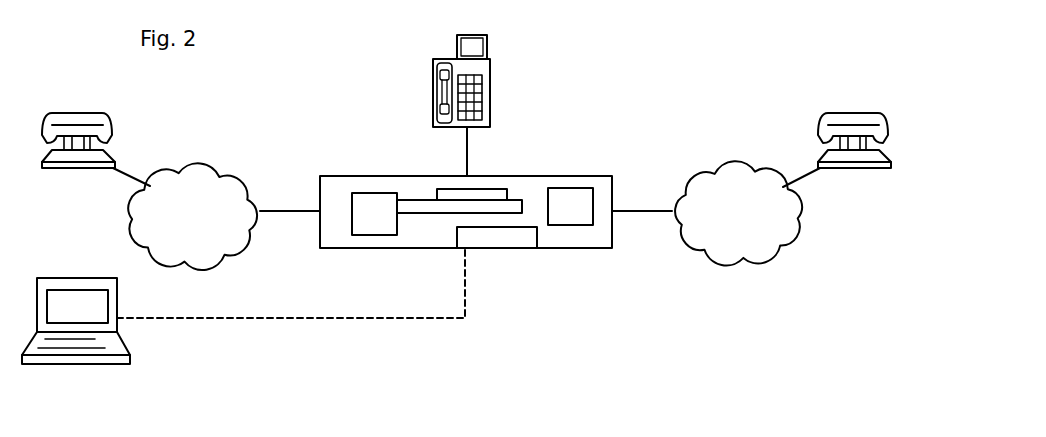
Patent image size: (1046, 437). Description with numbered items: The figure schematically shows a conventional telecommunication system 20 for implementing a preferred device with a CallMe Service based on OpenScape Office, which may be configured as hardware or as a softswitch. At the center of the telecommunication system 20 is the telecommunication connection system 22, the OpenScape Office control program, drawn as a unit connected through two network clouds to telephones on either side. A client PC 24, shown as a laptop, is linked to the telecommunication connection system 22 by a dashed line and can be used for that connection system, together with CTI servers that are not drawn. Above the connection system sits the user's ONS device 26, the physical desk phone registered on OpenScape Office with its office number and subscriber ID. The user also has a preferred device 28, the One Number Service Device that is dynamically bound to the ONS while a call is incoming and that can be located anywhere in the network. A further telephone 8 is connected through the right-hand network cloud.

The communication system 20 is at (677, 108).
The gateway / server unit 22 is at (573, 248).
The computer 24 is at (127, 340).
The IP telephone 26 is at (490, 88).
The telephone 28 is at (107, 147).
The telephone 8 is at (837, 134).